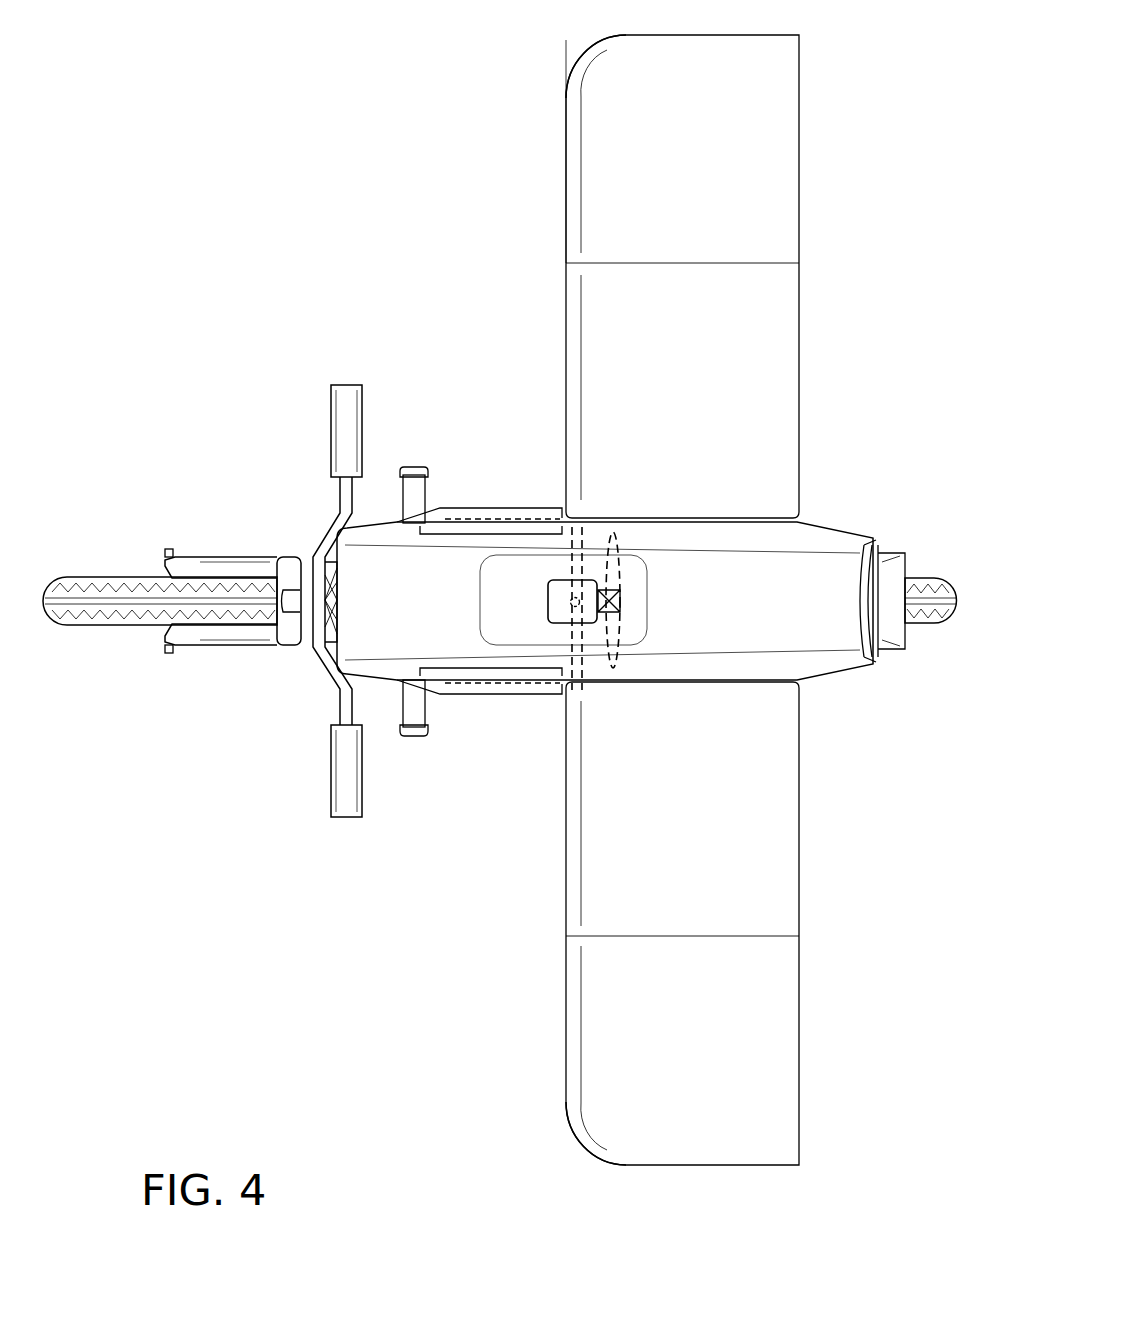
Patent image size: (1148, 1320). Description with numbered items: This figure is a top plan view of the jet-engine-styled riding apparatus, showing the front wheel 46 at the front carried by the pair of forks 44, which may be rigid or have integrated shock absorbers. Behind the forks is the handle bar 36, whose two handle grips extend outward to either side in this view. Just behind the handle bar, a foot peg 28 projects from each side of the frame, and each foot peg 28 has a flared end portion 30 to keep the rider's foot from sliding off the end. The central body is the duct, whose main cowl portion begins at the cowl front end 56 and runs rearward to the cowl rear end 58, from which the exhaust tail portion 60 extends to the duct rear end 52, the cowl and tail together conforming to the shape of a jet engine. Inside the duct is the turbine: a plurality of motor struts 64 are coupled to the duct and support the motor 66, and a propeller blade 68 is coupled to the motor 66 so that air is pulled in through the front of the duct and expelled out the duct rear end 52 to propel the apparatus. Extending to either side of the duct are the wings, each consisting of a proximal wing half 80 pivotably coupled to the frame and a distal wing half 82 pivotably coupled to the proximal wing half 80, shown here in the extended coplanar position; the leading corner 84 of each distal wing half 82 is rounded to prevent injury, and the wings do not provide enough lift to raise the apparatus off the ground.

The foot peg 28 is at (415, 712).
The flared end portion 30 is at (417, 737).
The handle bar 36 is at (320, 550).
The pair of forks 44 is at (212, 637).
The front wheel 46 is at (97, 600).
The duct rear end 52 is at (927, 580).
The cowl front end 56 is at (333, 640).
The cowl rear end 58 is at (863, 578).
The exhaust tail portion 60 is at (886, 578).
The motor struts 64 is at (573, 617).
The motor 66 is at (561, 618).
The propeller blade 68 is at (615, 617).
The proximal wing half 80 is at (768, 360).
The distal wing half 82 is at (757, 168).
The leading corner 84 is at (573, 72).